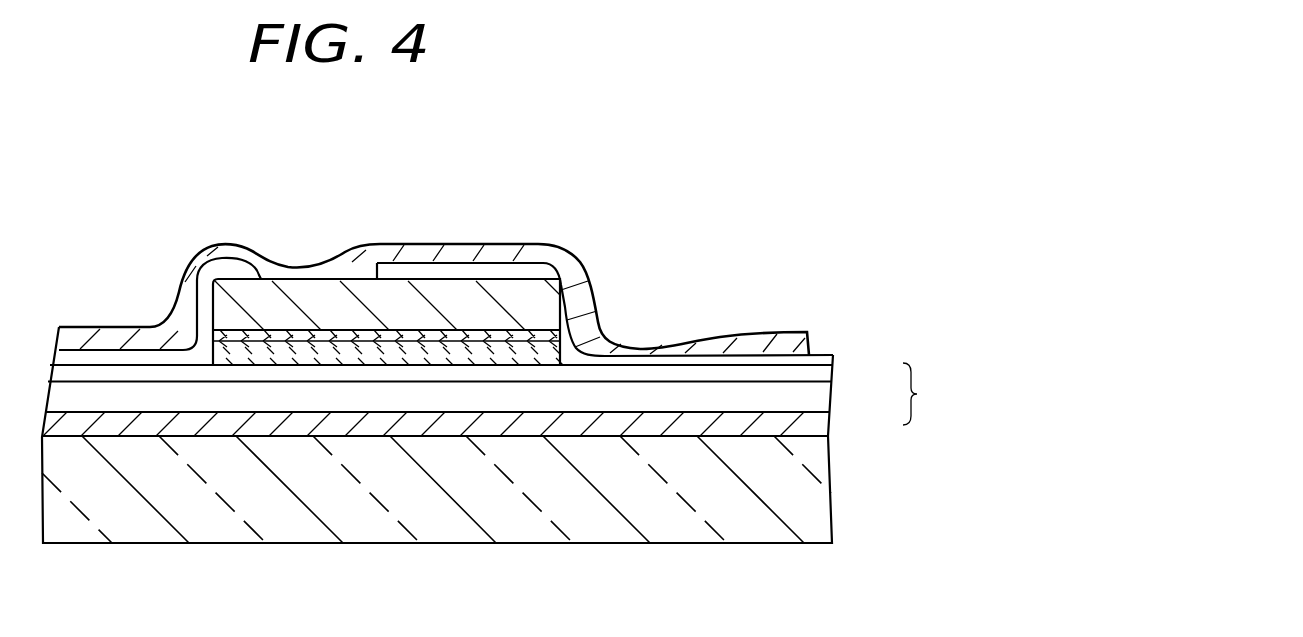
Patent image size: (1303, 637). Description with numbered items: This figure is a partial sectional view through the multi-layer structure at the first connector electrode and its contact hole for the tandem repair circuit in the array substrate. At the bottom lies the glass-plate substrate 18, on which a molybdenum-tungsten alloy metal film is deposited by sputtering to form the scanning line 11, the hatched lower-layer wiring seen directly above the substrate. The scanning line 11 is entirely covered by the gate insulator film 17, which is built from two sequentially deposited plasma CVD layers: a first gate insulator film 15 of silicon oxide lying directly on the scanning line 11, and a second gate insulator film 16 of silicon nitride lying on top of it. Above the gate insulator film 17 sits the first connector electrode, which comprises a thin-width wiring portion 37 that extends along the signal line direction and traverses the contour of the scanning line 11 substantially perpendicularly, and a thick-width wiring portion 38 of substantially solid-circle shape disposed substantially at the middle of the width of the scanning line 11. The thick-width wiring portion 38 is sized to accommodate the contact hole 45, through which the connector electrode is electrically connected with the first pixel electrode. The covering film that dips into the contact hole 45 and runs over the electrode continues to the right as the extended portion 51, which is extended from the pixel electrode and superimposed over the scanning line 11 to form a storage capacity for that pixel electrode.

The thick-width wiring portion 38 is at (240, 290).
The contact hole 45 is at (265, 270).
The thin-width wiring portion 37 is at (540, 293).
The extended portion 51 is at (688, 337).
The second gate insulator film 16 is at (827, 377).
The first gate insulator film 15 is at (827, 400).
The gate insulator film 17 is at (664, 409).
The scanning line 11 is at (817, 428).
The glass-plate substrate 18 is at (813, 505).